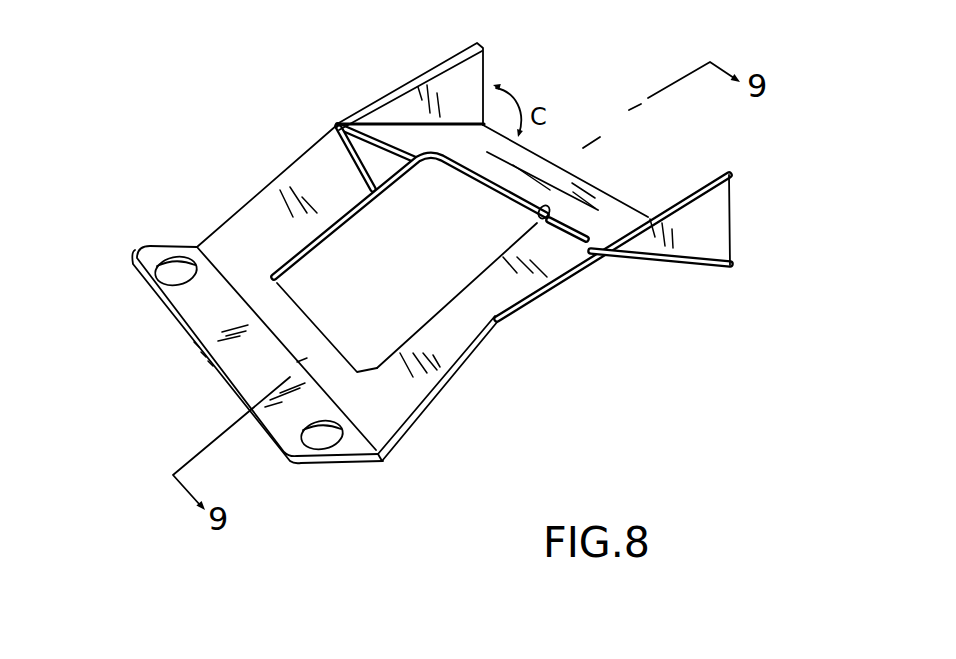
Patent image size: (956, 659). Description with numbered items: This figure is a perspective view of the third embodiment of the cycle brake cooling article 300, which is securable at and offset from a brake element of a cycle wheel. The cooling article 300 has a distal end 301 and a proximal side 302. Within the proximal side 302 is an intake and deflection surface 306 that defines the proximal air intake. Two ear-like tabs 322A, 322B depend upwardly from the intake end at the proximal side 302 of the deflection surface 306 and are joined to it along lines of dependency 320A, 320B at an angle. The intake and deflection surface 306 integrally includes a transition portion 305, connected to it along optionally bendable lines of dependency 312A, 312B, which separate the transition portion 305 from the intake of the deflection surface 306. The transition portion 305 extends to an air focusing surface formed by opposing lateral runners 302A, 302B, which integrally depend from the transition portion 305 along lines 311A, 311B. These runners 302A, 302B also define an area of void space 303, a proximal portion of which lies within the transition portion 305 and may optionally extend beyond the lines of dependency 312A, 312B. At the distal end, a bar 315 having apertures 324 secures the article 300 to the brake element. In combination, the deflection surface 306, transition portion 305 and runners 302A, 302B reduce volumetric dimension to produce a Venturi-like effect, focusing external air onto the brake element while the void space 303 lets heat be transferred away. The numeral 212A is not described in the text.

The cooling article 300 is at (720, 370).
The distal end 301 is at (183, 372).
The proximal side 302 is at (457, 205).
The air focusing surface 302A is at (447, 357).
The air focusing surface 302B is at (270, 217).
The void space 303 is at (389, 276).
The transition portion 305 is at (540, 268).
The intake and deflection surface 306 is at (560, 262).
The line 311A is at (497, 318).
The line 311B is at (340, 147).
The line of dependency 312A is at (573, 248).
The line of dependency 312B is at (393, 123).
The bar 315 is at (240, 367).
The line of dependency 320A is at (688, 262).
The line of dependency 320B is at (473, 118).
The ear-like tab 322A is at (707, 228).
The ear-like tab 322B is at (473, 80).
The aperture 324 is at (322, 438).
The bend edge 212A is at (320, 345).